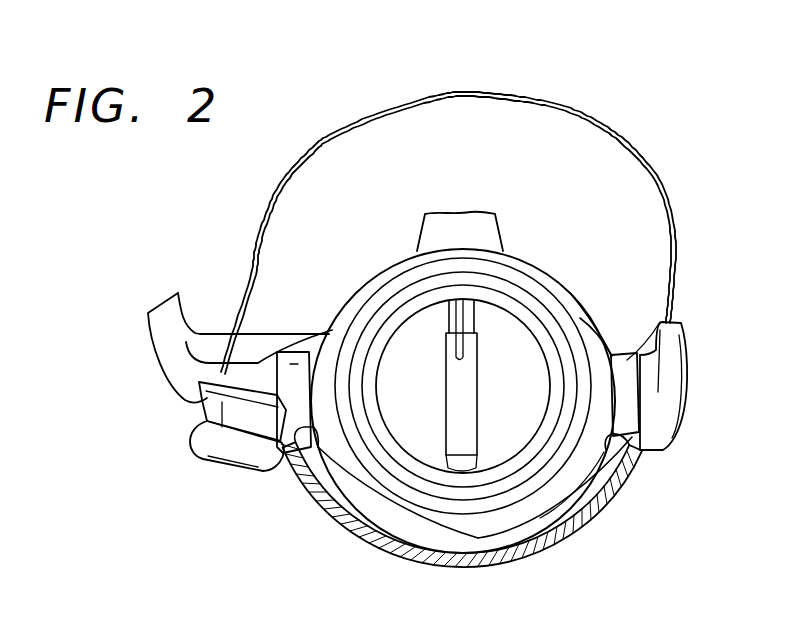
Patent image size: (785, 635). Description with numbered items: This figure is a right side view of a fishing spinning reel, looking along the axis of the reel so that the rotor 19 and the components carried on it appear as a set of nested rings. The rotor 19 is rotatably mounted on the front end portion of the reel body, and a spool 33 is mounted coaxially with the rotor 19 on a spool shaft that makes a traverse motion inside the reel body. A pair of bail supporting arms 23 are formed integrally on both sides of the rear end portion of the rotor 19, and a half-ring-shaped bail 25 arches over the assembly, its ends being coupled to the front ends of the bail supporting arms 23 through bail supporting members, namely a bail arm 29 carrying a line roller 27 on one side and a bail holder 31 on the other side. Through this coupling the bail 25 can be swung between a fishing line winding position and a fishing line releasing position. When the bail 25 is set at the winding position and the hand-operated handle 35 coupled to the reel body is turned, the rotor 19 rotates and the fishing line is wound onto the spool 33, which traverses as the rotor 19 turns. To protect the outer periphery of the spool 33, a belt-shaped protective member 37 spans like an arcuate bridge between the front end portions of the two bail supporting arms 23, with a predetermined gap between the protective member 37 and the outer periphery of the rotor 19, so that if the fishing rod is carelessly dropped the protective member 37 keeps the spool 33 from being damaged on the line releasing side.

The rotor 19 is at (545, 490).
The bail supporting arms 23 is at (293, 414).
The bail 25 is at (484, 94).
The line roller 27 is at (200, 416).
The bail arm 29 is at (264, 362).
The bail holder 31 is at (662, 455).
The spool 33 is at (477, 492).
The hand-operated handle 35 is at (170, 297).
The protective member 37 is at (372, 548).